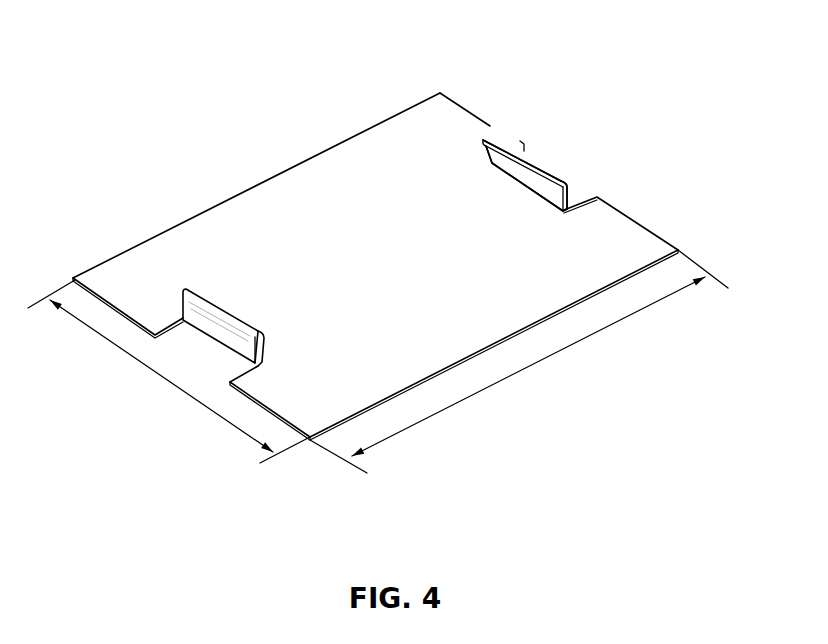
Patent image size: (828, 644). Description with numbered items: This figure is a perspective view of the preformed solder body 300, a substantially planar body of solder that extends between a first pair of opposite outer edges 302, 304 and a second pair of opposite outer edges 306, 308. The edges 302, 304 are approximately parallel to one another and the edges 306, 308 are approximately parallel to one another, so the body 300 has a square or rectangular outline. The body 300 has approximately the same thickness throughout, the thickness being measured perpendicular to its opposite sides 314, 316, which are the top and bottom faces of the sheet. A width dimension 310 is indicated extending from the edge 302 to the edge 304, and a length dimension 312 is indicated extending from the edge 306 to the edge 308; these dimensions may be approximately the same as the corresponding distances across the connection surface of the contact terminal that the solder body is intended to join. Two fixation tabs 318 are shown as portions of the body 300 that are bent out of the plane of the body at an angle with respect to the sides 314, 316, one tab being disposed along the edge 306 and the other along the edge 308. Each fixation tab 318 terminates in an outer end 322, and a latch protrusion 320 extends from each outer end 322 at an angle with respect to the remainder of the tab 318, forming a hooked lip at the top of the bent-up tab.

The preformed solder body 300 is at (287, 145).
The outer edge 302 is at (475, 358).
The outer edge 304 is at (195, 215).
The outer edge 306 is at (262, 408).
The outer edge 308 is at (492, 127).
The width dimension 310 is at (105, 337).
The length dimension 312 is at (590, 330).
The side 314 is at (353, 130).
The side 316 is at (420, 132).
The fixation tab 318 is at (218, 347).
The latch protrusion 320 is at (265, 337).
The outer end 322 is at (213, 313).